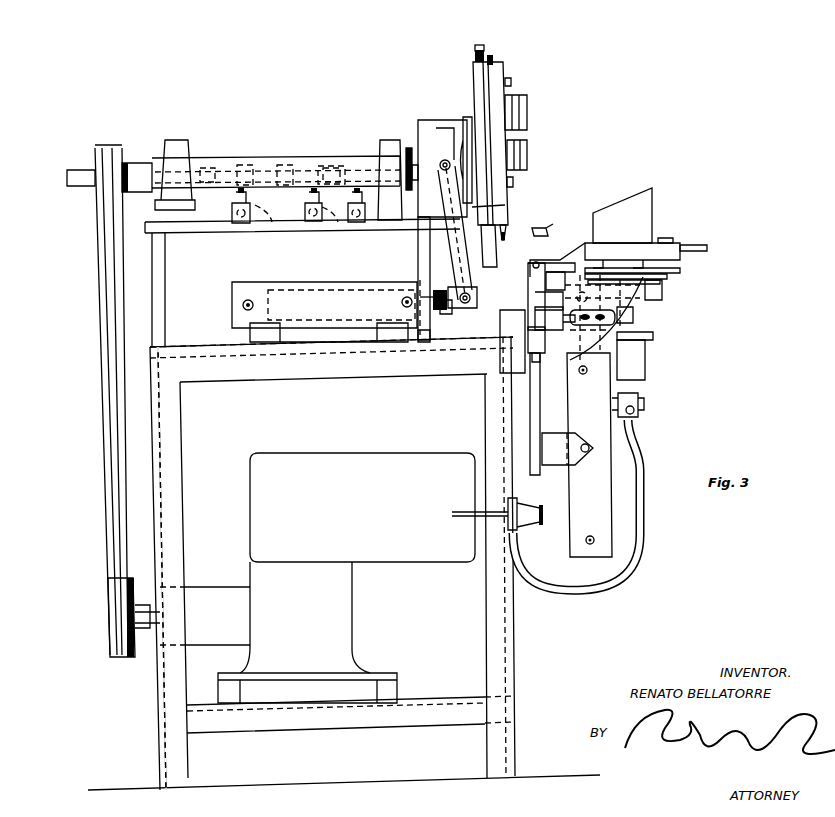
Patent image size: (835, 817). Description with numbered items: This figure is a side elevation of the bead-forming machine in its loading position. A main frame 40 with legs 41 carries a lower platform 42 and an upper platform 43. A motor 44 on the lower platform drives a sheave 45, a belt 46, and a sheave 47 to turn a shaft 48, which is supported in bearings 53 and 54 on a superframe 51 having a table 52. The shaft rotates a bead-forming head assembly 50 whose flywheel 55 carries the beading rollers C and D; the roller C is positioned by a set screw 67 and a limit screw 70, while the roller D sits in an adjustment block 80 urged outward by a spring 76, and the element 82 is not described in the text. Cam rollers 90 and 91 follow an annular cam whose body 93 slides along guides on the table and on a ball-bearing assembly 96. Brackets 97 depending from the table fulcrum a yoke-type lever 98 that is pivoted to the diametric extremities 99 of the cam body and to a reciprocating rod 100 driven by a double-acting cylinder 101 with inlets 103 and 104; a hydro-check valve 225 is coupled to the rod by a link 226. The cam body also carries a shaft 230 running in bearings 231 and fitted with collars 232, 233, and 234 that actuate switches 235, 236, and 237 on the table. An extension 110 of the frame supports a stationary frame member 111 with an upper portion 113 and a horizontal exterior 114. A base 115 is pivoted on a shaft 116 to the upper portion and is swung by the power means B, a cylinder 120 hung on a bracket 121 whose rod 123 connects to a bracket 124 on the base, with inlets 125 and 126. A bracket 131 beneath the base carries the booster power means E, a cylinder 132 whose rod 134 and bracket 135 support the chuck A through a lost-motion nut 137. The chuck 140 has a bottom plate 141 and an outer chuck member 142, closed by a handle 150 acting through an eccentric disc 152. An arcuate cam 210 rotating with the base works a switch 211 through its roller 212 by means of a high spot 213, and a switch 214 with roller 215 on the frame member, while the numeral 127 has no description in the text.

The main frame 40 is at (316, 381).
The legs 41 is at (162, 691).
The lower platform 42 is at (442, 698).
The upper platform 43 is at (214, 344).
The motor 44 is at (352, 601).
The sheave 45 is at (108, 638).
The belt 46 is at (120, 470).
The sheave 47 is at (100, 203).
The shaft 48 is at (89, 172).
The bead-forming head assembly 50 is at (468, 76).
The superframe 51 is at (170, 276).
The table 52 is at (212, 234).
The shaft-supporting bearing 53 is at (196, 128).
The shaft-supporting bearing 54 is at (390, 138).
The flywheel 55 is at (493, 258).
The set screw 67 is at (520, 182).
The limit screw 70 is at (506, 238).
The spring 76 is at (474, 52).
The adjustment block 80 is at (498, 64).
The lug 82 is at (514, 86).
The cam roller 90 is at (504, 206).
The cam roller 91 is at (468, 120).
The cam body 93 is at (426, 120).
The ball-bearing assembly 96 is at (412, 193).
The depending brackets 97 is at (442, 238).
The yoke-type lever 98 is at (477, 291).
The diametric extremities 99 is at (450, 156).
The reciprocating rod 100 is at (436, 337).
The cylinder 101 is at (298, 284).
The inlet 103 is at (243, 305).
The inlet 104 is at (402, 302).
The extension 110 is at (500, 330).
The stationary frame member 111 is at (528, 318).
The upper frame portion 113 is at (528, 283).
The horizontal exterior 114 is at (535, 296).
The base 115 is at (668, 278).
The shaft 116 is at (540, 262).
The cylinder 120 is at (597, 498).
The bracket 121 is at (566, 482).
The rod 123 is at (602, 317).
The bracket 124 is at (558, 281).
The inlet 125 is at (596, 528).
The inlet 126 is at (588, 374).
The stop 127 is at (552, 238).
The bracket 131 is at (653, 340).
The pneumatic cylinder 132 is at (646, 377).
The rod 134 is at (637, 322).
The bracket 135 is at (640, 306).
The nut 137 is at (616, 263).
The chuck 140 is at (628, 240).
The bottom plate 141 is at (682, 270).
The outer chuck member 142 is at (644, 240).
The chuck-closing handle 150 is at (705, 250).
The cylindrical disc 152 is at (666, 236).
The arcuate cam 210 is at (656, 375).
The switch 211 is at (663, 293).
The roller 212 is at (662, 282).
The high spot 213 is at (548, 377).
The switch 214 is at (528, 338).
The roller 215 is at (555, 318).
The hydro-check valve 225 is at (316, 280).
The link 226 is at (444, 310).
The shaft 230 is at (265, 149).
The bearings 231 is at (220, 219).
The collar 232 is at (344, 152).
The collar 233 is at (296, 152).
The collar 234 is at (252, 152).
The switch 235 is at (353, 224).
The switch 236 is at (313, 224).
The switch 237 is at (263, 224).
The chuck A is at (682, 237).
The power means B is at (603, 447).
The beading roller C is at (537, 150).
The beading roller D is at (532, 94).
The booster power means E is at (655, 382).